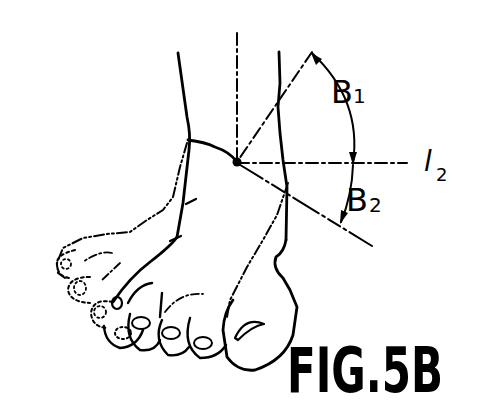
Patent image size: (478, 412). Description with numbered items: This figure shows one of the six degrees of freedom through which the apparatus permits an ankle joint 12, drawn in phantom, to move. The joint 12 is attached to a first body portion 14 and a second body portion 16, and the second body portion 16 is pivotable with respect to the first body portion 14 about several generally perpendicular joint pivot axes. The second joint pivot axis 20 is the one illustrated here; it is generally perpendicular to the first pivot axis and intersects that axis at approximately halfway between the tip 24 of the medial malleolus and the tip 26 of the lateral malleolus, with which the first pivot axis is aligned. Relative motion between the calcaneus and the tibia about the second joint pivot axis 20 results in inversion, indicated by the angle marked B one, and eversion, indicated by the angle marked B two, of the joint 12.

The first body portion 14 is at (271, 64).
The ankle joint 12 is at (268, 141).
The second joint pivot axis 20 is at (190, 140).
The tip of the medial malleolus 24 is at (288, 178).
The second body portion 16 is at (285, 256).
The tip of the lateral malleolus 26 is at (178, 197).